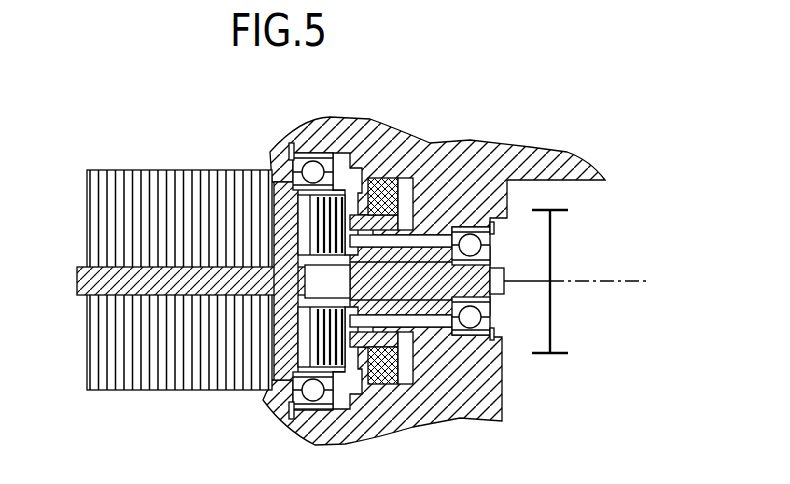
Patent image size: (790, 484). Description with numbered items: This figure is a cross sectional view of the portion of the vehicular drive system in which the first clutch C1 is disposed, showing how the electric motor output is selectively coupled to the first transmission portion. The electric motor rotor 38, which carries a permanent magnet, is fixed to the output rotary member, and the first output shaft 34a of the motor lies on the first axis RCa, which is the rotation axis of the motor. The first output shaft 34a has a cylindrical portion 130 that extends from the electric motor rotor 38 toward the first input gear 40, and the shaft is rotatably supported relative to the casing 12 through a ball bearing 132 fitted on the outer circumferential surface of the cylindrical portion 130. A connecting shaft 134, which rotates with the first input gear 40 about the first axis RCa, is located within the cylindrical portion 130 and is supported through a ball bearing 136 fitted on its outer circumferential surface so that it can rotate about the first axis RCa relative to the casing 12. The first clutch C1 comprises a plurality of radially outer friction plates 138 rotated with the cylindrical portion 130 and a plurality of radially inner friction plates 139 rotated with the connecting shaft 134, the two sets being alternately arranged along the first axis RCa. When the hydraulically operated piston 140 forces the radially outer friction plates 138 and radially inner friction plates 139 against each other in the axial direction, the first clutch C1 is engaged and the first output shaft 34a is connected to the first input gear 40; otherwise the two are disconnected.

The casing 12 is at (470, 150).
The electric motor rotor 38 is at (138, 172).
The first output shaft 34a is at (281, 178).
The cylindrical portion 130 is at (347, 160).
The ball bearing 132 is at (298, 152).
The connecting shaft 134 is at (500, 271).
The ball bearing 136 is at (495, 313).
The radially outer friction plates 138 is at (340, 374).
The radially inner friction plates 139 is at (331, 264).
The hydraulically operated piston 140 is at (415, 178).
The first clutch C1 is at (355, 281).
The first input gear 40 is at (560, 212).
The first axis RCa is at (614, 282).